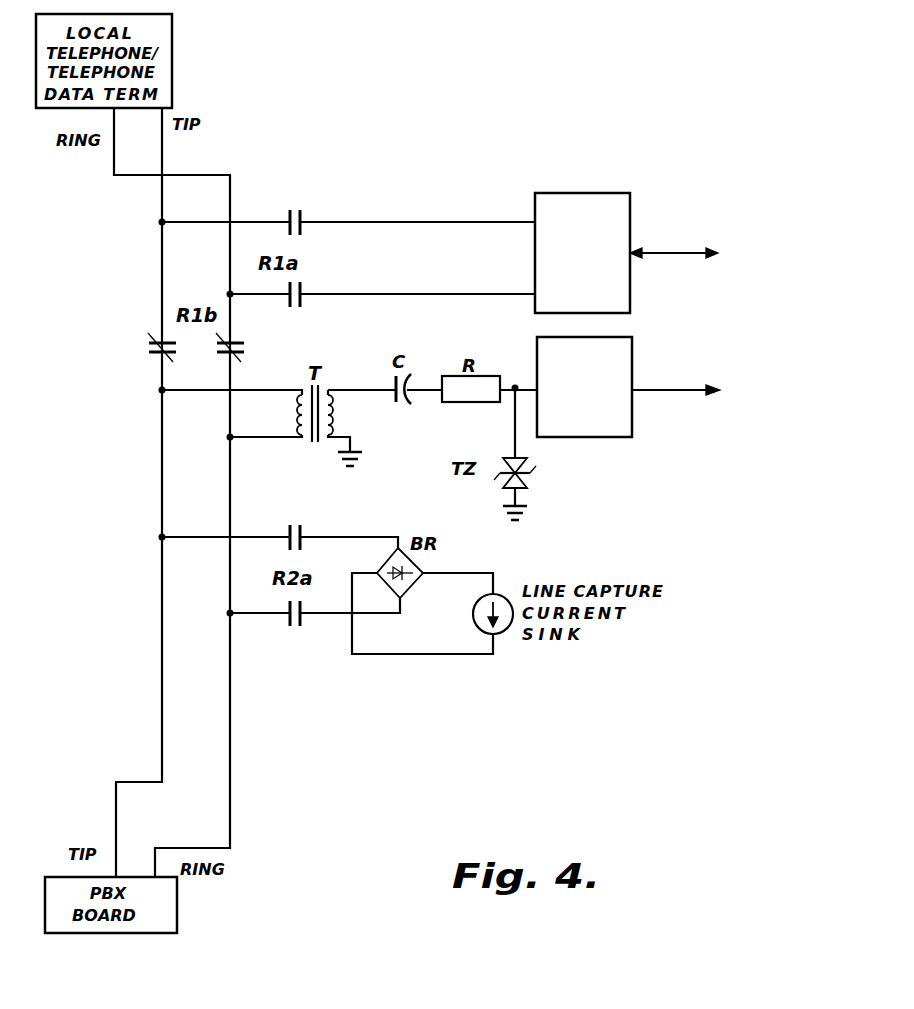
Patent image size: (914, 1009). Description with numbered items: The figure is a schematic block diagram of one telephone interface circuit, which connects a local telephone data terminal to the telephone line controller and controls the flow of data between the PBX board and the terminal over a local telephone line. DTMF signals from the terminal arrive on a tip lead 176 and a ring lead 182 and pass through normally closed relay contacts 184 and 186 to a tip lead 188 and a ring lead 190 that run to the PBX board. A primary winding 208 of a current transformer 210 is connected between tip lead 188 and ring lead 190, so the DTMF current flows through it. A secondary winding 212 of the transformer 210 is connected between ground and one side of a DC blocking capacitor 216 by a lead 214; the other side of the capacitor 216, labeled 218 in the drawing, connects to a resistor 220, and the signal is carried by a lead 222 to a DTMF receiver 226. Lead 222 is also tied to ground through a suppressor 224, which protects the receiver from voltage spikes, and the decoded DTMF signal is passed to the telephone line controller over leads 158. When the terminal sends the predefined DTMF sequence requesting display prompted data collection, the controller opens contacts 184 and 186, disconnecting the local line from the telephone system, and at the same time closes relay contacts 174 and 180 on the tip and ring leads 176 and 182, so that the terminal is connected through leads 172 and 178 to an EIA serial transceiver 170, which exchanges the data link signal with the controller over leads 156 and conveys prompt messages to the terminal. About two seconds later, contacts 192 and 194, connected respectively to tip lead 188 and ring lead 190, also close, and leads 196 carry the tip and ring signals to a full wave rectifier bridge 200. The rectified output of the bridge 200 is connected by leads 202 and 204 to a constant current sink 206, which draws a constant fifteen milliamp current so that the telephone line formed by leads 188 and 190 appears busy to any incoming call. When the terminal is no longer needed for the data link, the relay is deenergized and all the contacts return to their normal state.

The leads 156 is at (672, 253).
The leads 158 is at (672, 390).
The RS-422 transceiver 170 is at (575, 193).
The lead 172 is at (390, 222).
The relay contact 174 is at (306, 220).
The tip lead 176 is at (255, 222).
The lead 178 is at (400, 294).
The relay contact 180 is at (305, 290).
The ring lead 182 is at (233, 318).
The normally closed relay contact 184 is at (150, 357).
The normally closed relay contact 186 is at (238, 350).
The tip lead 188 is at (162, 484).
The ring lead 190 is at (232, 494).
The relay contact 192 is at (305, 536).
The relay contact 194 is at (304, 620).
The leads 196 is at (380, 536).
The full wave rectifier bridge 200 is at (428, 564).
The lead 202 is at (488, 574).
The lead 204 is at (418, 655).
The constant current sink 206 is at (474, 622).
The primary winding 208 is at (300, 410).
The current transformer 210 is at (306, 444).
The secondary winding 212 is at (333, 412).
The lead 214 is at (356, 390).
The DC blocking capacitor 216 is at (412, 380).
The capacitor C connection 218 is at (410, 398).
The resistor 220 is at (496, 376).
The lead 222 is at (512, 440).
The suppressor 224 is at (525, 484).
The DTMF receiver 226 is at (612, 440).